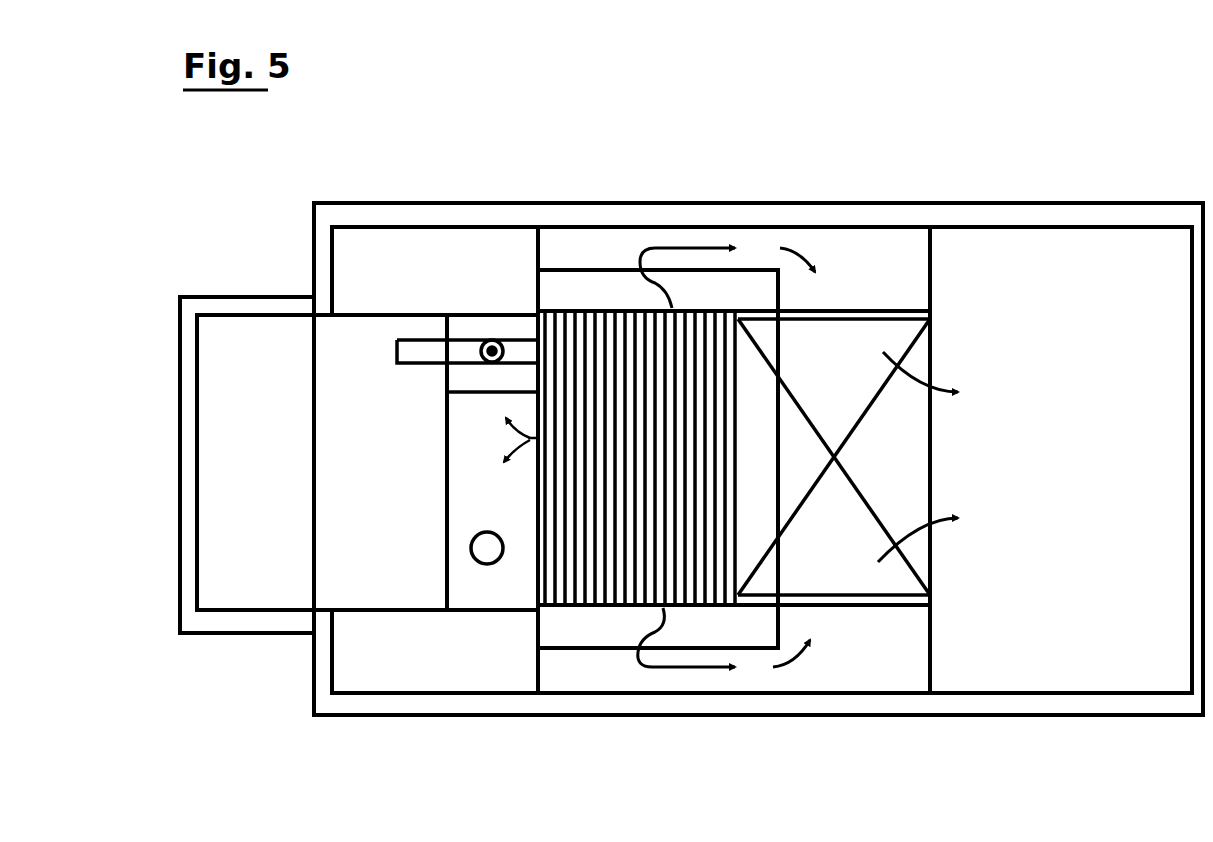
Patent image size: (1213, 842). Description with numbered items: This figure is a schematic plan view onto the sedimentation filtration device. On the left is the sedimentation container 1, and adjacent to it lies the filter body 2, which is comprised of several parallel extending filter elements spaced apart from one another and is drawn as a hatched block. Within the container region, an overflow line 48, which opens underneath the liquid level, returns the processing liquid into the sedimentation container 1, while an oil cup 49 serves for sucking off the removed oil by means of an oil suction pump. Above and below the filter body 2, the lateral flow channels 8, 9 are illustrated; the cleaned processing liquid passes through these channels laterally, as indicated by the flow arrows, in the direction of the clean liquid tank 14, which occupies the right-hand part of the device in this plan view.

The sedimentation container 1 is at (336, 453).
The filter body 2 is at (645, 449).
The lateral flow channel 8 is at (862, 253).
The lateral flow channel 9 is at (852, 660).
The clean liquid tank 14 is at (1090, 449).
The overflow line 48 is at (417, 350).
The oil cup 49 is at (487, 548).